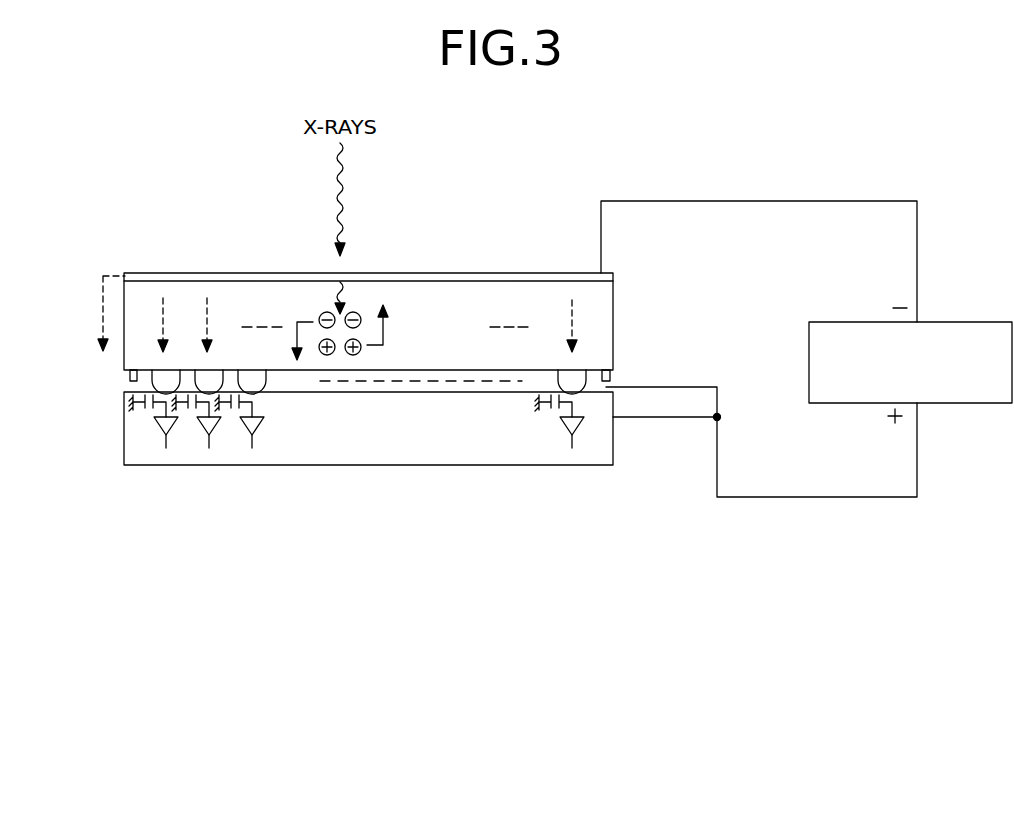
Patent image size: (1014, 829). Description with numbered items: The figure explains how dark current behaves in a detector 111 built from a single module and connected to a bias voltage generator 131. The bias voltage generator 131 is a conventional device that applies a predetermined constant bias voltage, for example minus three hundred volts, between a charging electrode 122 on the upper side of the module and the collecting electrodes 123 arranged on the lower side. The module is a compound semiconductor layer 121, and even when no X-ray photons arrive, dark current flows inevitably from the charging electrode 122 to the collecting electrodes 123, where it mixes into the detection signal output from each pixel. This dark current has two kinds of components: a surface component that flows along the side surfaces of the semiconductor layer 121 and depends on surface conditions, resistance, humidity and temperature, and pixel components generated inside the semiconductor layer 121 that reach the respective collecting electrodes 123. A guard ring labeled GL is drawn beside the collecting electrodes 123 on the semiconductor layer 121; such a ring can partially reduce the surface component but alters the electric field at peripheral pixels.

The detector 111 is at (133, 250).
The semiconductor layer 121 is at (124, 323).
The charging electrode 122 is at (133, 272).
The guard electrode / gap layer GL is at (130, 377).
The collecting electrodes 123 is at (153, 375).
The bias voltage generator 131 is at (947, 322).